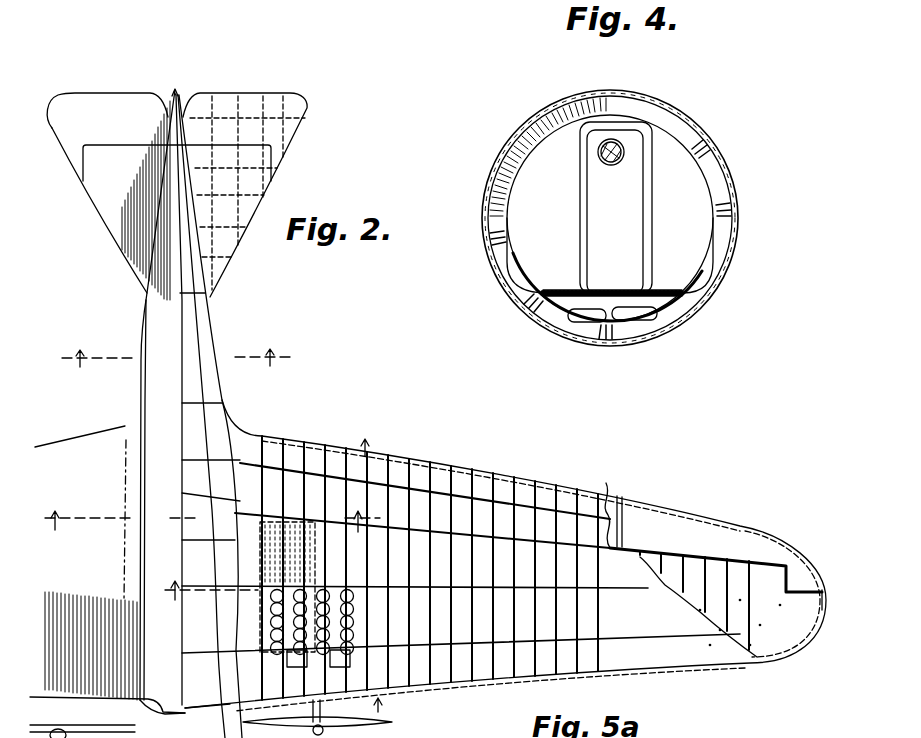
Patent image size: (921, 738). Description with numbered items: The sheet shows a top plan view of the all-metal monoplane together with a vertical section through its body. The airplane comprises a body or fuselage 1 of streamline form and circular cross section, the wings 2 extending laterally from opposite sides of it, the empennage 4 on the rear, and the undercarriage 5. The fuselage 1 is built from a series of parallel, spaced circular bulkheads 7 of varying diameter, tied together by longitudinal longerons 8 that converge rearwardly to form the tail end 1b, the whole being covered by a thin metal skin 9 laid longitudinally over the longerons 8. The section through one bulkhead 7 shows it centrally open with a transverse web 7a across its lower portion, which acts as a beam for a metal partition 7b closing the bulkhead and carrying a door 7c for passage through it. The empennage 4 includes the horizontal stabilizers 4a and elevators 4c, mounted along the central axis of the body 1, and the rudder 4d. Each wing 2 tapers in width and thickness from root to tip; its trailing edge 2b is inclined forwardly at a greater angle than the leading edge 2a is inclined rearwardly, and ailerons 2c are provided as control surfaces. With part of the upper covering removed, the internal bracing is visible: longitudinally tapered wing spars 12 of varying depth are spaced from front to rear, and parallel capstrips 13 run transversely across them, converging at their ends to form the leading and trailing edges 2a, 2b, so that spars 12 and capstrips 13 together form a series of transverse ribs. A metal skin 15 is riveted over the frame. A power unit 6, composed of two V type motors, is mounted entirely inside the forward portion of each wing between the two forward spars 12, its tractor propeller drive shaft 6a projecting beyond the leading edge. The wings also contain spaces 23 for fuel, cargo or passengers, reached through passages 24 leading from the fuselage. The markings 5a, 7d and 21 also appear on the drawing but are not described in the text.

In FIG. 2, the body or fuselage 1 is at (140, 358).
In FIG. 2, the tail end of the fuselage 1b is at (195, 118).
In FIG. 2, the wings 2 is at (430, 555).
In FIG. 2, the leading edge 2a is at (565, 676).
In FIG. 2, the trailing edge 2b is at (425, 487).
In FIG. 2, the ailerons 2c is at (681, 570).
In FIG. 2, the empennage 4 is at (178, 215).
In FIG. 2, the horizontal stabilizers 4a is at (139, 200).
In FIG. 2, the elevators 4c is at (159, 193).
In FIG. 2, the rudder 4d is at (172, 118).
In FIG. 2, the undercarriage 5 is at (499, 600).
In FIG. 2, the section line 5a is at (212, 508).
In FIG. 2, the power units 6 is at (70, 712).
In FIG. 2, the tractor propeller drive shaft 6a is at (262, 674).
In FIG. 2, the circular bulkheads 7 is at (205, 506).
In FIG. 4, the circular bulkheads 7 is at (692, 158).
In FIG. 4, the transverse web 7a is at (578, 300).
In FIG. 4, the metal partition 7b is at (692, 300).
In FIG. 4, the door 7c is at (616, 207).
In FIG. 4, the side compartment 7d is at (674, 220).
In FIG. 2, the longerons 8 is at (212, 556).
In FIG. 4, the longerons 8 is at (700, 144).
In FIG. 2, the skin or covering 9 is at (162, 536).
In FIG. 4, the skin or covering 9 is at (582, 110).
In FIG. 2, the wing spars 12 is at (470, 530).
In FIG. 2, the capstrips 13 is at (425, 470).
In FIG. 2, the skin or covering 15 is at (404, 634).
In FIG. 2, the aileron spar 21 is at (568, 496).
In FIG. 2, the spaces 23 is at (505, 568).
In FIG. 2, the passages 24 is at (327, 588).